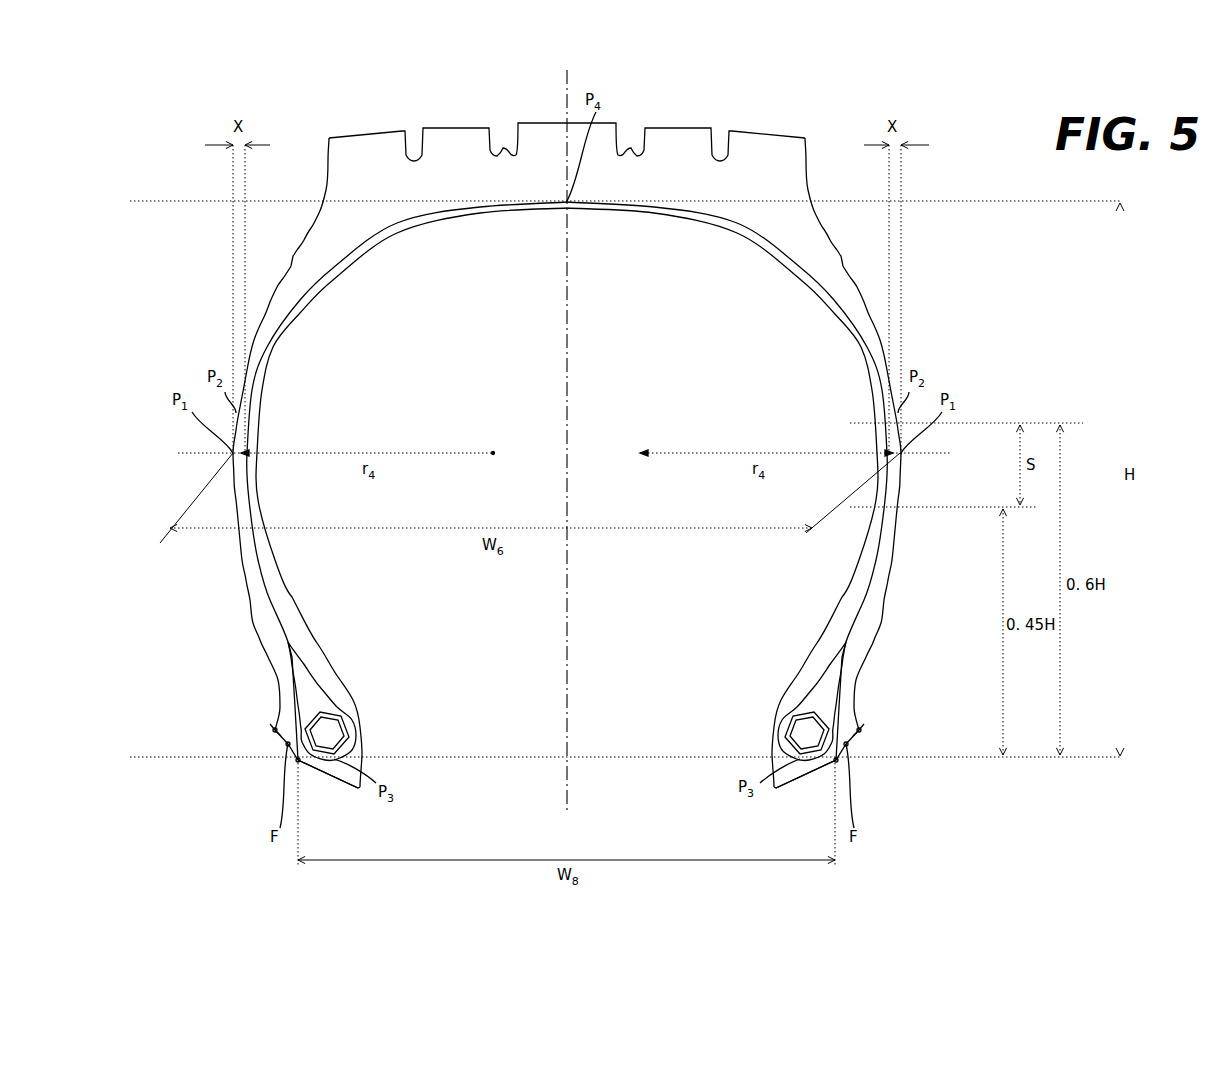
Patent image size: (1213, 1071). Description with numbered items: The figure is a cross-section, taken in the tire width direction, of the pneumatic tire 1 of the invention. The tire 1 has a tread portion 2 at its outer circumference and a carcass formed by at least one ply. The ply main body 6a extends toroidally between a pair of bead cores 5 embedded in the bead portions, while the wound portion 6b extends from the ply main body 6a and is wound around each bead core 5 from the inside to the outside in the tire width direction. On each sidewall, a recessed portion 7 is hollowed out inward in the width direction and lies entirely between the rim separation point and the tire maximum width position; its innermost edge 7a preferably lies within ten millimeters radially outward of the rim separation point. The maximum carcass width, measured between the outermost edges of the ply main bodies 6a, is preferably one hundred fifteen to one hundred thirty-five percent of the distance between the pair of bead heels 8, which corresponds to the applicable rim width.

The tire 1 is at (310, 128).
The tread portion 2 is at (464, 127).
The bead core 5 is at (332, 733).
The ply main body 6a is at (258, 403).
The wound portion 6b is at (322, 697).
The recessed portion 7 is at (263, 691).
The innermost edge of the recessed portion 7a is at (275, 730).
The bead heel 8 is at (303, 774).